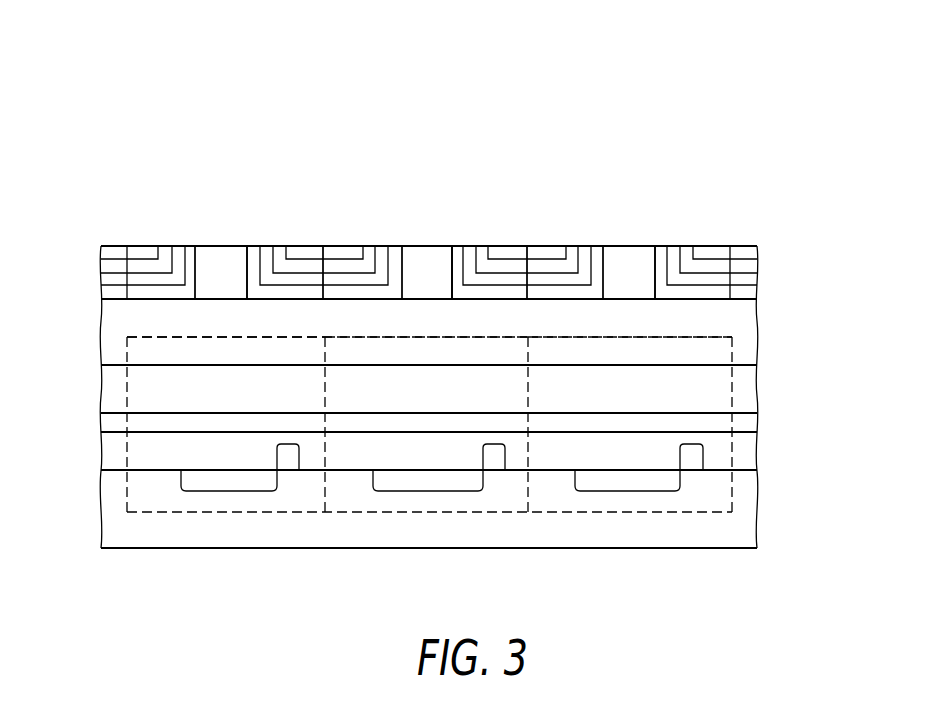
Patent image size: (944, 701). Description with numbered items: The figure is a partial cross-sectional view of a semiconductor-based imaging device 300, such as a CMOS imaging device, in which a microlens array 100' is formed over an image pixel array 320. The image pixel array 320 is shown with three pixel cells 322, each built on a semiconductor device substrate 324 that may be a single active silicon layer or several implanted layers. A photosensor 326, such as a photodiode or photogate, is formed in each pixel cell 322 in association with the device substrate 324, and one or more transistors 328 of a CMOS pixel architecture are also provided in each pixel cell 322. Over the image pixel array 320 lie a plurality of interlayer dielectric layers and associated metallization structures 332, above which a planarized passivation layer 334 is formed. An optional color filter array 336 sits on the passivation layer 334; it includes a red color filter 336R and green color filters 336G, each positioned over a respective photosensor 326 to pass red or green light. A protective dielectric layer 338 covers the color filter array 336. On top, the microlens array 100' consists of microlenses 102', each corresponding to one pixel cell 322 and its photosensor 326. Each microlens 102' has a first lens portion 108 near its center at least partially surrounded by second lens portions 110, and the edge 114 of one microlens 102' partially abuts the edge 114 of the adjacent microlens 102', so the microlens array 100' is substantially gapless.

The imaging device 300 is at (745, 90).
The microlens array 100' is at (471, 245).
The microlens 102' is at (479, 224).
The first lens portion 108 is at (222, 246).
The second lens portions 110 is at (402, 245).
The edge 114 is at (323, 245).
The image pixel array 320 is at (120, 348).
The image pixel cell 322 is at (206, 333).
The semiconductor device substrate 324 is at (748, 500).
The photosensor 326 is at (225, 475).
The transistor 328 is at (286, 462).
The interlayer dielectric layers 332 is at (748, 447).
The passivation layer 334 is at (748, 418).
The color filter array 336 is at (748, 388).
The green color filter 336G is at (250, 403).
The red color filter 336R is at (445, 403).
The dielectric layer 338 is at (748, 337).